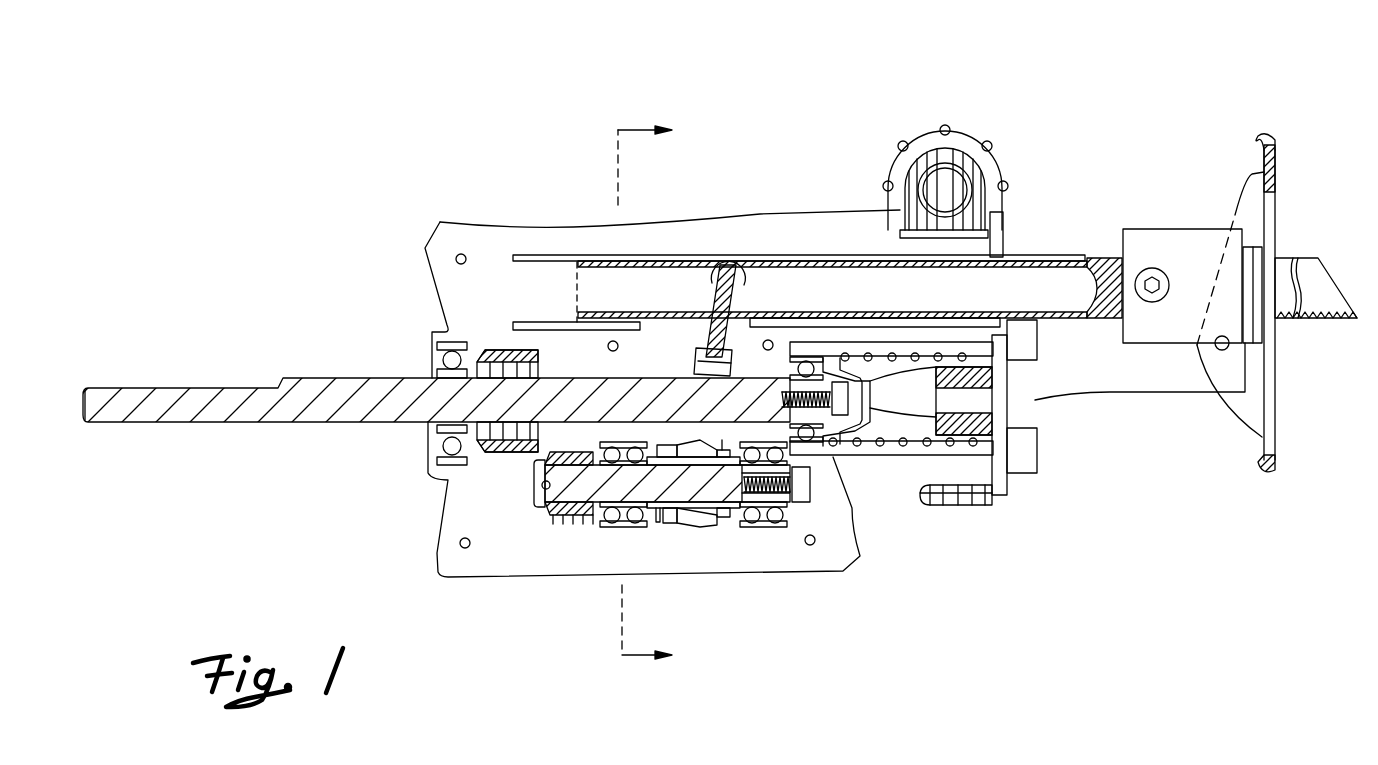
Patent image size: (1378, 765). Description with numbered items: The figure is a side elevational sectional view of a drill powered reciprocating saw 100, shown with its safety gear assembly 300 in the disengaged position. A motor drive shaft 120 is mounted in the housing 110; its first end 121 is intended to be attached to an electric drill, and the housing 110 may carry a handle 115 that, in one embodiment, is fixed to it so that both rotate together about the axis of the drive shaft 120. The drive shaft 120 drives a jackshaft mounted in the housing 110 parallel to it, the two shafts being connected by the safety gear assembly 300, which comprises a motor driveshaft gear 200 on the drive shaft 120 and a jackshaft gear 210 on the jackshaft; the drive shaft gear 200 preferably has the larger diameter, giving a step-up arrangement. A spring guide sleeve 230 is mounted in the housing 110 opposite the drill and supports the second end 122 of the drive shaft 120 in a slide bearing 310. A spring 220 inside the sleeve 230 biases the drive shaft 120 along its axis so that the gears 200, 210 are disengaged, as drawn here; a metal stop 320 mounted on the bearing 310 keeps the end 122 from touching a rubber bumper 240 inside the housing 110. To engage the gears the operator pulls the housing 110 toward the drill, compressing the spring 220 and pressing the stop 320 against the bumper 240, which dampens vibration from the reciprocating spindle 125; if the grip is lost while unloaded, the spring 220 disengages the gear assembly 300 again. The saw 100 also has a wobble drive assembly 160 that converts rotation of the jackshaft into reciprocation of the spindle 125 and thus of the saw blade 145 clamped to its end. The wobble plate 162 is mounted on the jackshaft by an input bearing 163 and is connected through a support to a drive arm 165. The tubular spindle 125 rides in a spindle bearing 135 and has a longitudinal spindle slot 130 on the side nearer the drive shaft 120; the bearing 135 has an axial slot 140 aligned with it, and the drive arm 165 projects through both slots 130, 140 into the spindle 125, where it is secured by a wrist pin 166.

The drill powered reciprocating saw 100 is at (776, 126).
The housing 110 is at (462, 225).
The handle 115 is at (972, 140).
The motor drive shaft 120 is at (163, 390).
The first end 121 is at (83, 414).
The second end 122 is at (1000, 386).
The reciprocating spindle 125 is at (1048, 257).
The spindle slot 130 is at (760, 313).
The spindle bearing 135 is at (535, 255).
The axial slot 140 is at (642, 321).
The saw blade 145 is at (1340, 265).
The wobble drive assembly 160 is at (674, 442).
The wobble plate 162 is at (700, 525).
The input bearing 163 is at (668, 522).
The drive arm 165 is at (707, 303).
The wrist pin 166 is at (768, 255).
The motor driveshaft gear 200 is at (496, 343).
The jackshaft gear 210 is at (547, 523).
The spring 220 is at (920, 493).
The spring guide sleeve 230 is at (959, 456).
The rubber bumper 240 is at (936, 412).
The safety gear assembly 300 is at (578, 480).
The slide bearing 310 is at (815, 350).
The metal stop 320 is at (1000, 400).